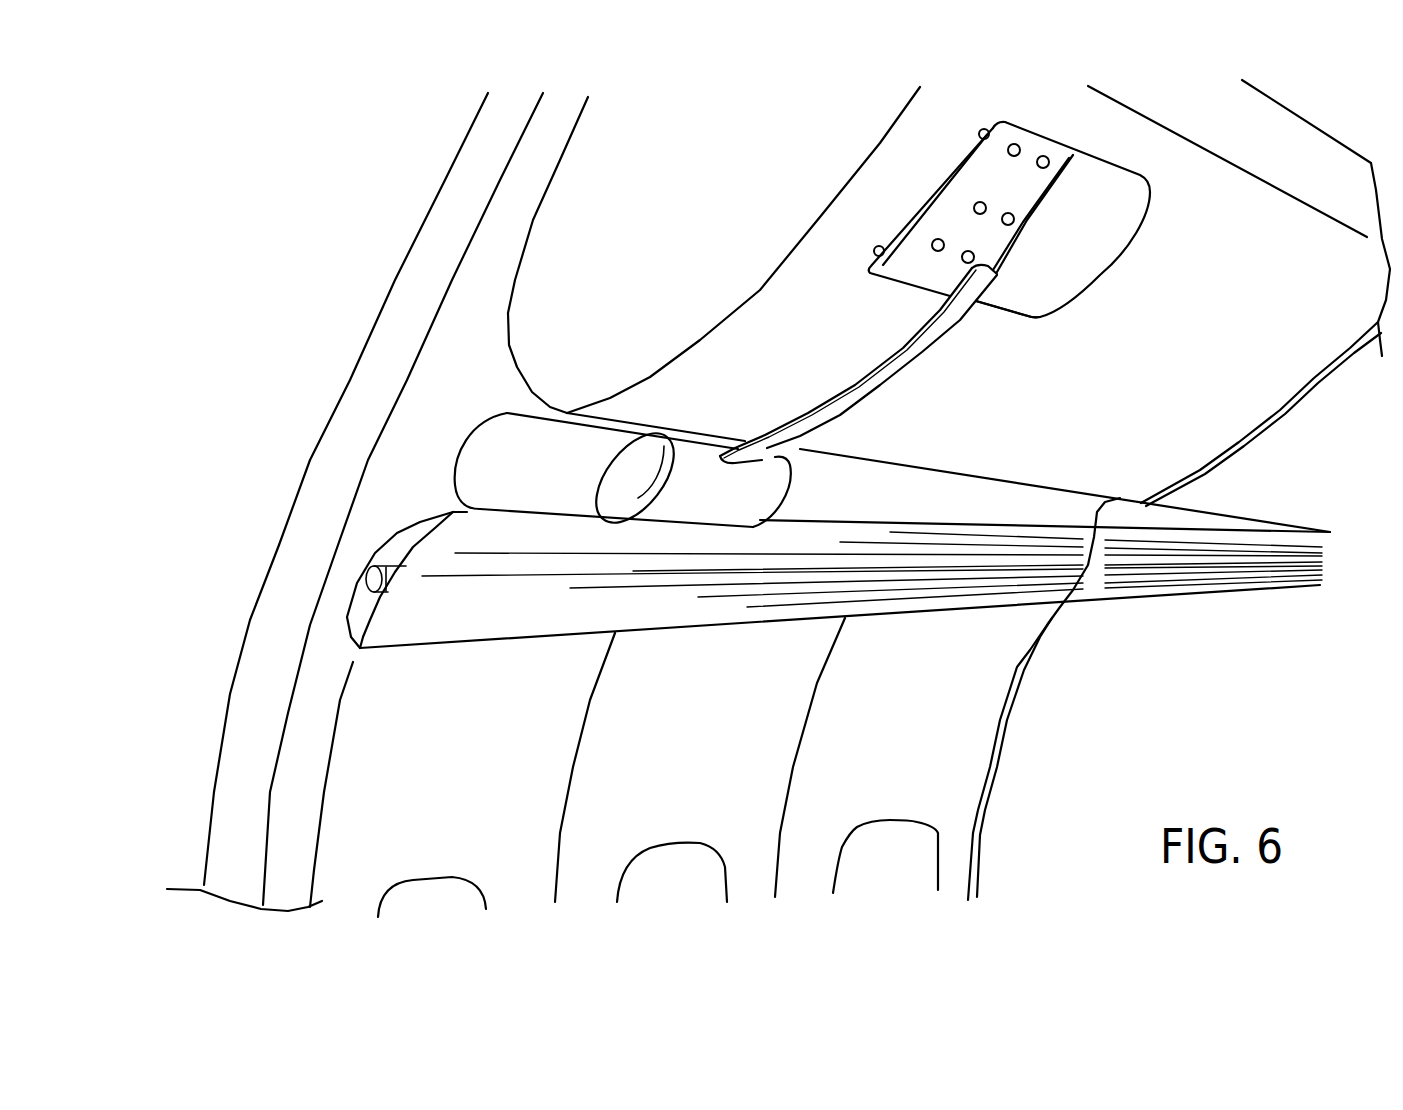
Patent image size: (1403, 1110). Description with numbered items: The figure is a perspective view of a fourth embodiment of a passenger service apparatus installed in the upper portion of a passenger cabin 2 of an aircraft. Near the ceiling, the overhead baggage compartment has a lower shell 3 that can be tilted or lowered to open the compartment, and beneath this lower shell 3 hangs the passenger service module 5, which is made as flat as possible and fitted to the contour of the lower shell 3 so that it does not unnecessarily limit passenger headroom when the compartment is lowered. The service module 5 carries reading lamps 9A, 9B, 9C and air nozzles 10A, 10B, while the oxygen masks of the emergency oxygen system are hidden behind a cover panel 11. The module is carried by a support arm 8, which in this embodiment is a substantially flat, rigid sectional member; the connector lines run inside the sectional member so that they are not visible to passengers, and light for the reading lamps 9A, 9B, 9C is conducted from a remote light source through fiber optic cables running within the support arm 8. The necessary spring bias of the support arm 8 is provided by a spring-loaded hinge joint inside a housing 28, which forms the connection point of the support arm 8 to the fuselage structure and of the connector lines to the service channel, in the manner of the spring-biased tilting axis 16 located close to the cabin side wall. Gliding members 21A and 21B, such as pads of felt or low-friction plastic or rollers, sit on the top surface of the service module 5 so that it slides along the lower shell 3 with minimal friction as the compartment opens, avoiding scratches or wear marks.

The passenger cabin 2 is at (325, 365).
The lower shell 3 is at (558, 173).
The passenger service module 5 is at (1106, 175).
The support arm 8 is at (900, 362).
The reading lamp 9A is at (1014, 144).
The reading lamp 9B is at (975, 205).
The reading lamp 9C is at (934, 251).
The air nozzle 10A is at (1048, 163).
The air nozzle 10B is at (1013, 221).
The cover panel 11 is at (1032, 282).
The tilting axis 16 is at (827, 452).
The gliding member 21A is at (987, 137).
The gliding member 21B is at (880, 250).
The housing 28 is at (775, 518).